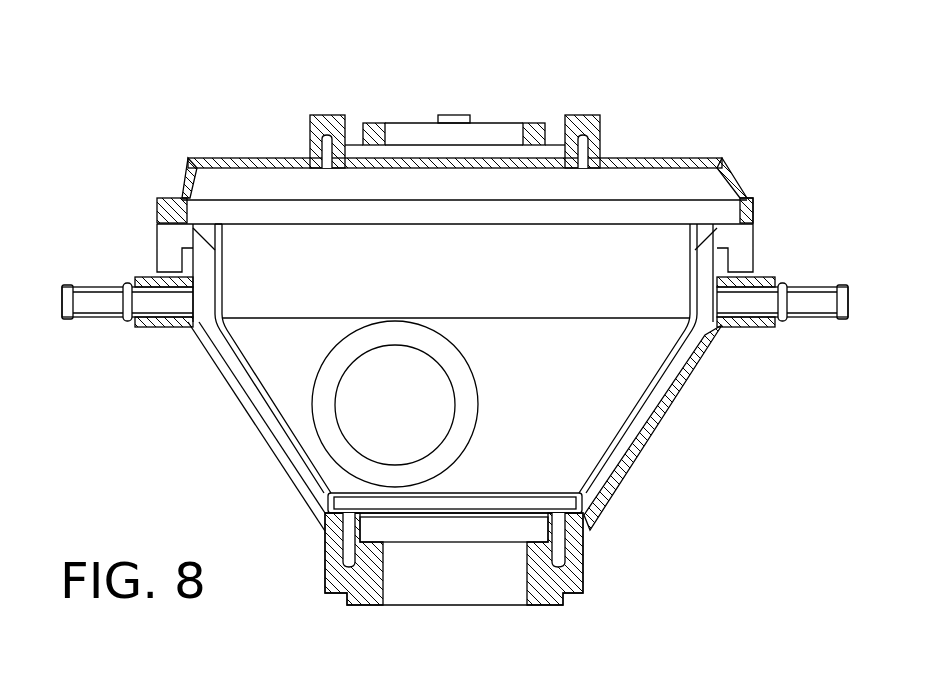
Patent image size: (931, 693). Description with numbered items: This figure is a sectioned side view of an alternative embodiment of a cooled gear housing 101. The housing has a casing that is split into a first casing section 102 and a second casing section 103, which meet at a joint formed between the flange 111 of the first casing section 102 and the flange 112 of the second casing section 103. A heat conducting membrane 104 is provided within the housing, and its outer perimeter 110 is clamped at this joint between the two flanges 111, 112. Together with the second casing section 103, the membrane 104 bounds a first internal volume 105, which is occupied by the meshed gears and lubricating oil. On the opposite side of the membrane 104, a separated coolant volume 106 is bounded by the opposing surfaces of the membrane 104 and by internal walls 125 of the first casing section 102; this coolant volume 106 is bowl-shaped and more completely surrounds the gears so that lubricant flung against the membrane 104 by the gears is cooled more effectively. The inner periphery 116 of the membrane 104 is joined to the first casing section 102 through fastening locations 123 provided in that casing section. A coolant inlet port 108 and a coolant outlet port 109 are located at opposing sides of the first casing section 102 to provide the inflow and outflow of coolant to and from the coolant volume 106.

The cooled gear housing 101 is at (772, 123).
The first casing section 102 is at (242, 418).
The second casing section 103 is at (230, 158).
The heat conducting membrane 104 is at (222, 257).
The first internal volume 105 is at (580, 265).
The coolant volume 106 is at (643, 412).
The coolant inlet port 108 is at (63, 303).
The coolant outlet port 109 is at (848, 320).
The outer perimeter 110 is at (753, 226).
The flange 111 is at (160, 240).
The flange 112 is at (160, 213).
The inner periphery 116 is at (540, 513).
The fastening locations 123 is at (558, 537).
The internal walls 125 is at (223, 363).